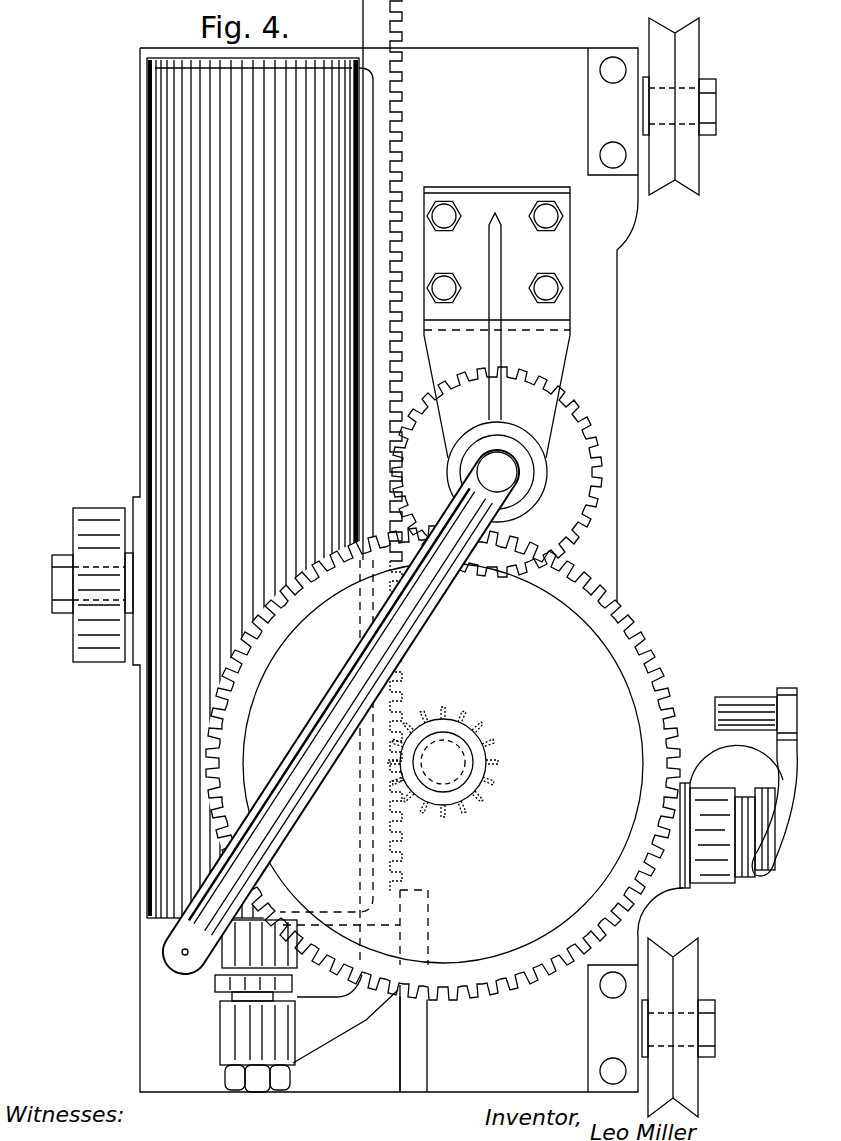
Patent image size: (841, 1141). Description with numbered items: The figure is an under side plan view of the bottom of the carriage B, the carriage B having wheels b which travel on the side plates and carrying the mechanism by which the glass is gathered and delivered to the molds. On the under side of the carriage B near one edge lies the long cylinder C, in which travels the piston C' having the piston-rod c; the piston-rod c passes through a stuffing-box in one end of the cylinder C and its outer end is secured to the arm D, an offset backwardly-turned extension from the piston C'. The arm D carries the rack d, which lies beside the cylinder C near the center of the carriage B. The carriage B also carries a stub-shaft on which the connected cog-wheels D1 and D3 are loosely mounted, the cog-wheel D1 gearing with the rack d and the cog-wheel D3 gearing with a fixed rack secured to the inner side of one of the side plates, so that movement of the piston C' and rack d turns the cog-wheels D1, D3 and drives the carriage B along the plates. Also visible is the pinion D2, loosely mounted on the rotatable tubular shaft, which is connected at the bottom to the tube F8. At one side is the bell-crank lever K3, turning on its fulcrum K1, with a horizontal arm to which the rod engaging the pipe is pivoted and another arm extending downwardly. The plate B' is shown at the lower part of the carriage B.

The carriage B is at (458, 555).
The lower frame plate B' is at (426, 1050).
The cylinder C is at (228, 488).
The piston C' is at (185, 973).
The piston-rod c is at (232, 996).
The arm D is at (333, 1033).
The cog-wheel D1 is at (500, 782).
The pinion D2 is at (585, 466).
The cog-wheel D3 is at (647, 693).
The rack d is at (380, 28).
The tube F8 is at (425, 605).
The fulcrum K1 is at (742, 806).
The bell-crank lever K3 is at (782, 760).
The wheels b is at (698, 162).